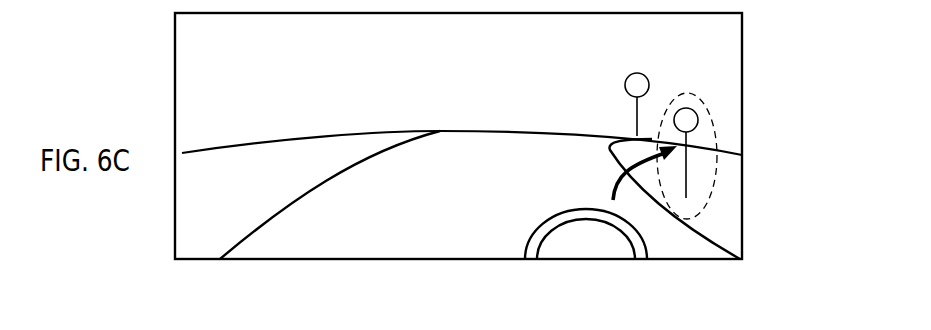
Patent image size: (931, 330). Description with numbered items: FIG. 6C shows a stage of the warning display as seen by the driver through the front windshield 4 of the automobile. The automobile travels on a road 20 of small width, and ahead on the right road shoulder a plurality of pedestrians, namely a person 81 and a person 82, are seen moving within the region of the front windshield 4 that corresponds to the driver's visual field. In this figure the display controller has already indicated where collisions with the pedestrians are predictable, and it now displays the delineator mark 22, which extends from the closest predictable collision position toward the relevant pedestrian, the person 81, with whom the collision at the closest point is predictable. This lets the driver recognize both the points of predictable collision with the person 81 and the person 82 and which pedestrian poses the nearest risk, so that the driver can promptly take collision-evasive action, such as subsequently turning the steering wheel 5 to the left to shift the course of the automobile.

The front windshield 4 is at (742, 58).
The road 20 is at (442, 260).
The delineator mark 22 is at (623, 178).
The steering wheel 5 is at (623, 233).
The person 82 is at (630, 87).
The person 81 is at (679, 122).